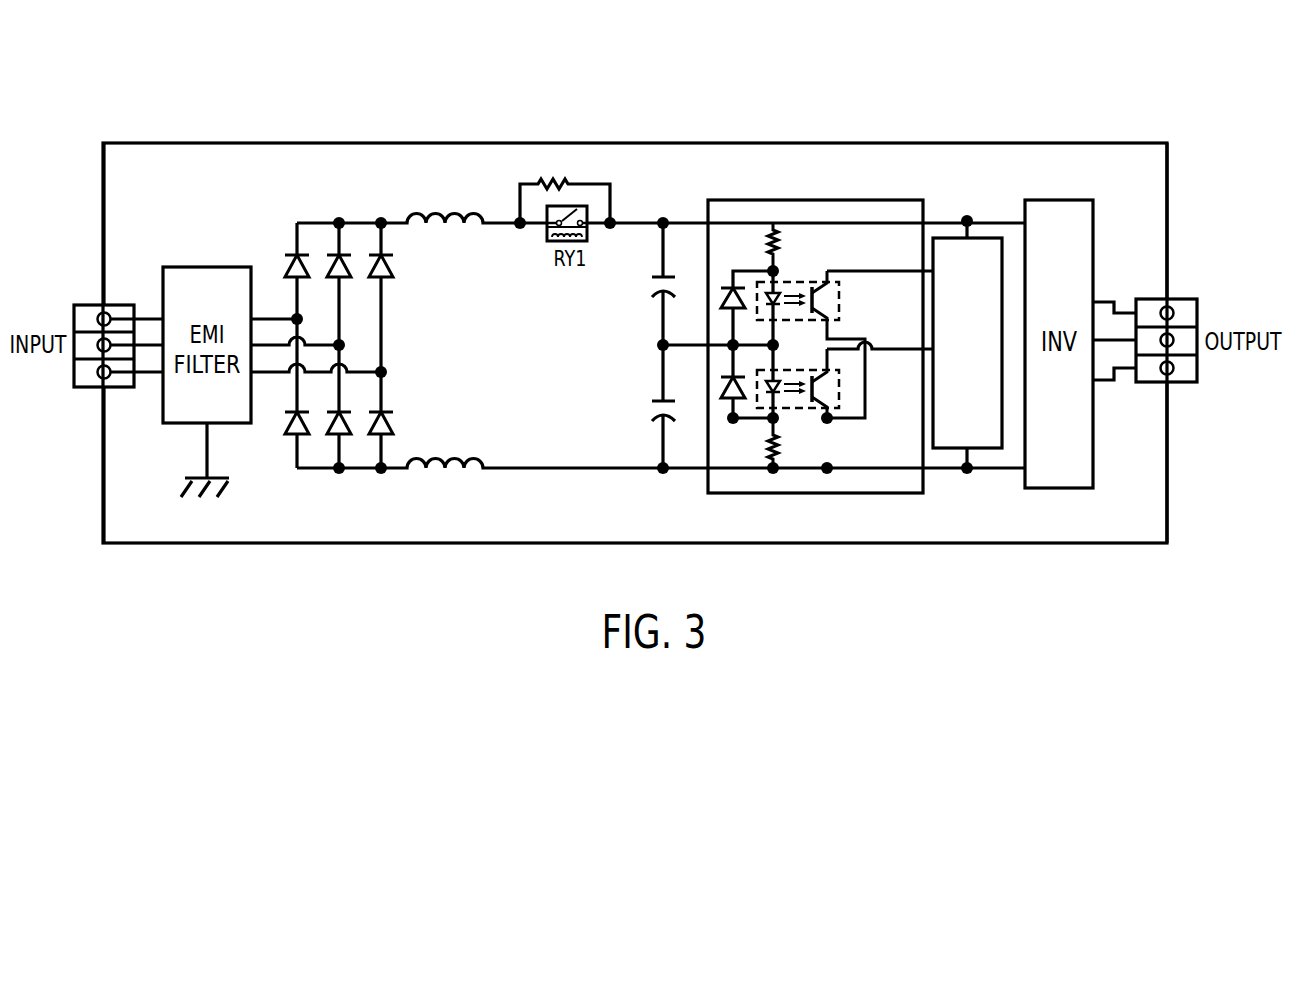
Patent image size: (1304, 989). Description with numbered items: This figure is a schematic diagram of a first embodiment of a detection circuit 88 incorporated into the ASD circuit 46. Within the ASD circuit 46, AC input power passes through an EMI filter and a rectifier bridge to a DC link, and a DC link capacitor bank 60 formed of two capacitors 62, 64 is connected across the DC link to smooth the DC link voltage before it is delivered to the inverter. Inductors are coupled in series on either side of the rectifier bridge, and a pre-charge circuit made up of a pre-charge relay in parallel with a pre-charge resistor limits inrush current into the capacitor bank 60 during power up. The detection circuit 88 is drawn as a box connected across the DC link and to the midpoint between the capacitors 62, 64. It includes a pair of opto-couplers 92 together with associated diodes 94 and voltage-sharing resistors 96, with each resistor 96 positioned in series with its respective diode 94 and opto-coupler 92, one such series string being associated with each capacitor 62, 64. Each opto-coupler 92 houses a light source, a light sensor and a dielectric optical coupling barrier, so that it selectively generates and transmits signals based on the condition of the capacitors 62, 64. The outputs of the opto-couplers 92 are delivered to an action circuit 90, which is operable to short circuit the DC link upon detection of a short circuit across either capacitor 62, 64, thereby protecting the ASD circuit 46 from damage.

The ASD circuit 46 is at (742, 76).
The DC link capacitor bank 60 is at (628, 363).
The capacitor 62 is at (657, 283).
The capacitor 64 is at (650, 406).
The detection circuit 88 is at (819, 182).
The action circuit 90 is at (1004, 252).
The opto-coupler 92 is at (809, 266).
The diode 94 is at (722, 293).
The voltage-sharing resistor 96 is at (770, 232).